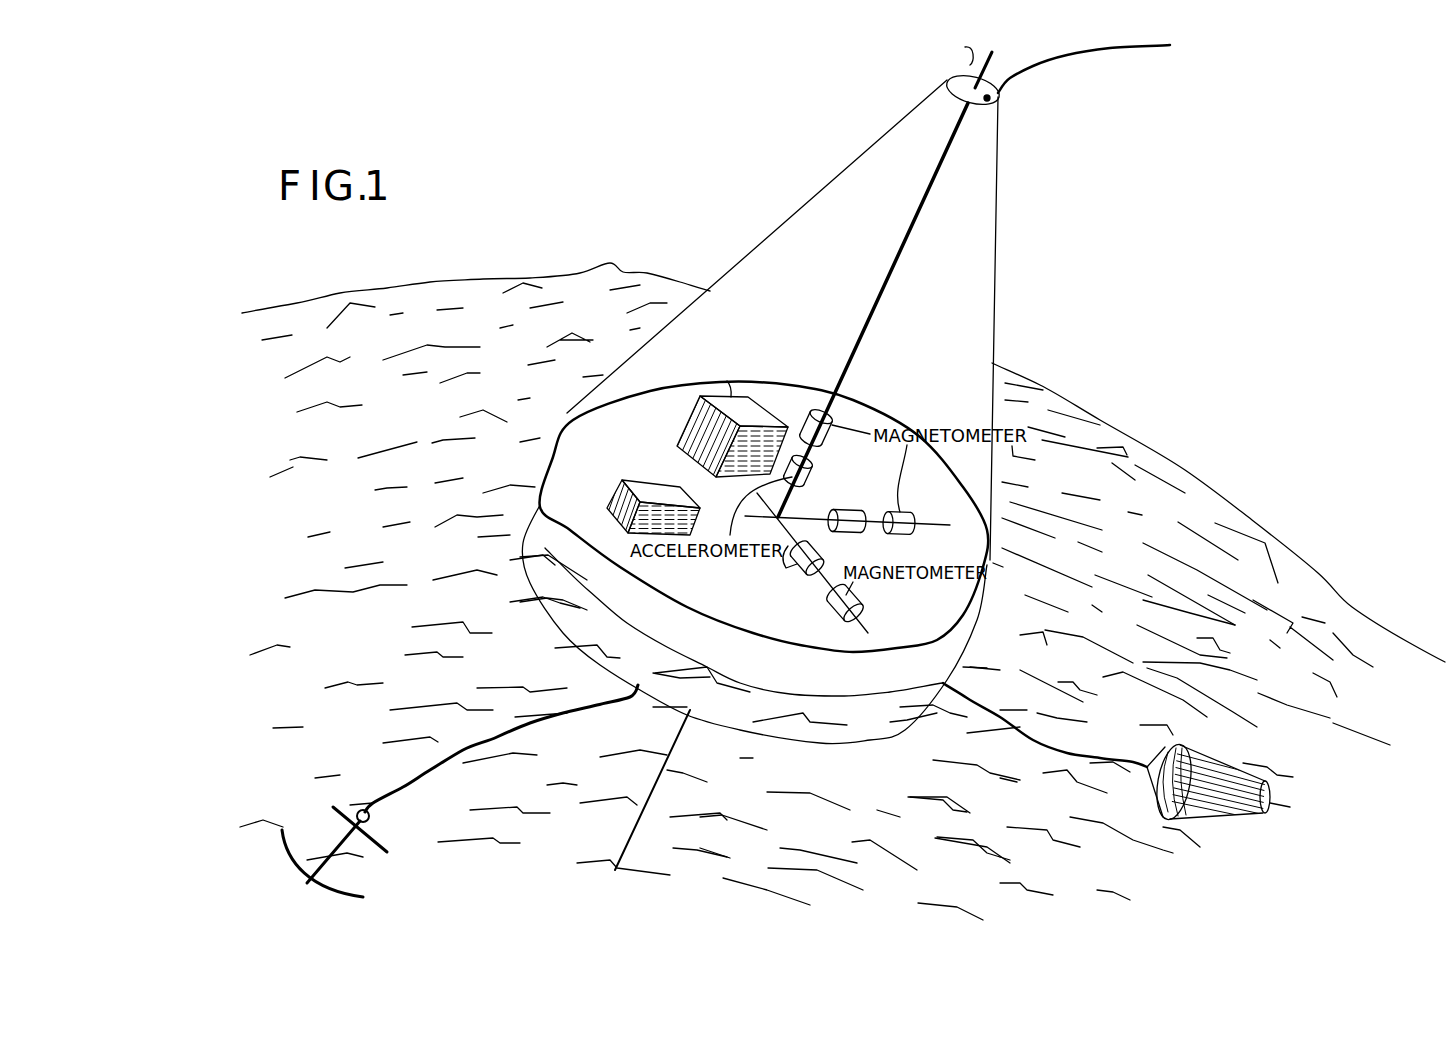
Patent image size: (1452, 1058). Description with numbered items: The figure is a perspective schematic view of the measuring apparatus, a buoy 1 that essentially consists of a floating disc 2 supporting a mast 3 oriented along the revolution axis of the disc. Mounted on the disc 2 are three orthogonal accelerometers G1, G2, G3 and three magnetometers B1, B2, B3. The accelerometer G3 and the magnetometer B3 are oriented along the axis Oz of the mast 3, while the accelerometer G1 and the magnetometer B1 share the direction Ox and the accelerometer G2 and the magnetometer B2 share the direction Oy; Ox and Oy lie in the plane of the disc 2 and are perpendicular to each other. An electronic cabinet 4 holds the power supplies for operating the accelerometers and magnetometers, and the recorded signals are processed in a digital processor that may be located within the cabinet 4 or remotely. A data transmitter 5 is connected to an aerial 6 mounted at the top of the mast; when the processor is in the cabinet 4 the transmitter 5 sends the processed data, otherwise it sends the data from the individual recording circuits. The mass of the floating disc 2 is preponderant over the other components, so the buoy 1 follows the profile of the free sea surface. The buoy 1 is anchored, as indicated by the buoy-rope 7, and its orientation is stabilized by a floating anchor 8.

The buoy 1 is at (1028, 283).
The floating disc 2 is at (970, 612).
The mast 3 is at (880, 300).
The electronic cabinet 4 is at (647, 458).
The data transmitter 5 is at (690, 413).
The aerial 6 is at (1065, 55).
The buoy-rope 7 is at (517, 733).
The floating anchor 8 is at (1215, 812).
The magnetometer B1 is at (856, 597).
The magnetometer B2 is at (900, 512).
The magnetometer B3 is at (835, 417).
The accelerometer G1 is at (824, 556).
The accelerometer G2 is at (852, 508).
The accelerometer G3 is at (815, 467).